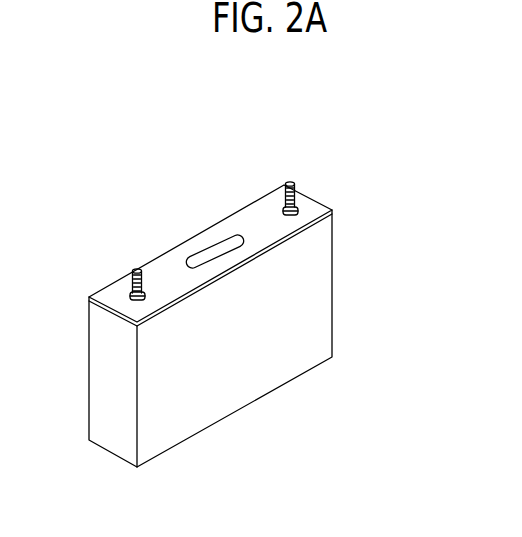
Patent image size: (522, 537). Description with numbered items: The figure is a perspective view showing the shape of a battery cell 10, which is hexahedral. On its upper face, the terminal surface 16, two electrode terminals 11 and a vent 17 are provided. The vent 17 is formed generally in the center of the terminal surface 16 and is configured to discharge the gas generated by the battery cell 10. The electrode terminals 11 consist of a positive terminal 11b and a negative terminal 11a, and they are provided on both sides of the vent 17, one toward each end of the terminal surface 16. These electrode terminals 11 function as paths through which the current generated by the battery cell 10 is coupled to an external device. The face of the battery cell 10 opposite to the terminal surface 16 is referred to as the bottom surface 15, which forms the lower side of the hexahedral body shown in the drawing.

The battery cell 10 is at (236, 283).
The electrode terminals 11 is at (185, 199).
The negative terminal 11a is at (137, 270).
The positive terminal 11b is at (270, 160).
The bottom surface 15 is at (233, 413).
The terminal surface 16 is at (308, 215).
The vent 17 is at (212, 252).